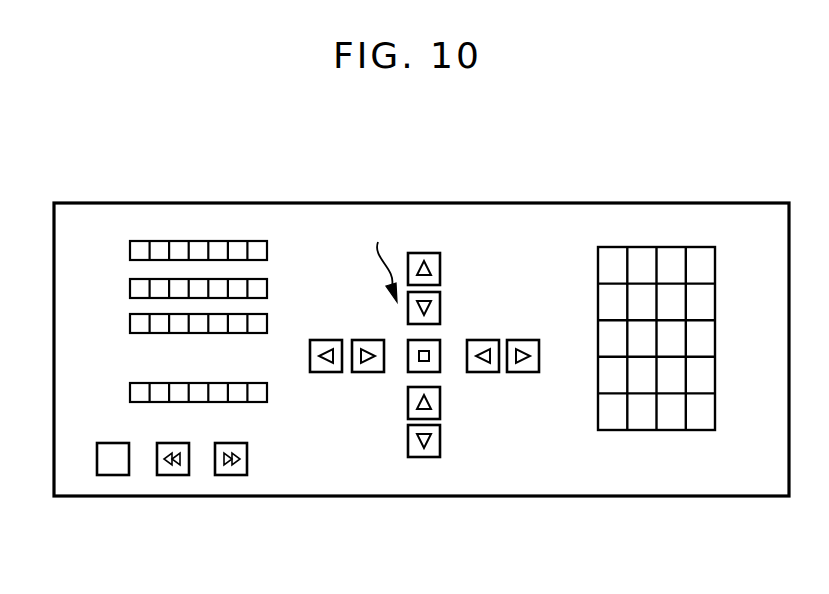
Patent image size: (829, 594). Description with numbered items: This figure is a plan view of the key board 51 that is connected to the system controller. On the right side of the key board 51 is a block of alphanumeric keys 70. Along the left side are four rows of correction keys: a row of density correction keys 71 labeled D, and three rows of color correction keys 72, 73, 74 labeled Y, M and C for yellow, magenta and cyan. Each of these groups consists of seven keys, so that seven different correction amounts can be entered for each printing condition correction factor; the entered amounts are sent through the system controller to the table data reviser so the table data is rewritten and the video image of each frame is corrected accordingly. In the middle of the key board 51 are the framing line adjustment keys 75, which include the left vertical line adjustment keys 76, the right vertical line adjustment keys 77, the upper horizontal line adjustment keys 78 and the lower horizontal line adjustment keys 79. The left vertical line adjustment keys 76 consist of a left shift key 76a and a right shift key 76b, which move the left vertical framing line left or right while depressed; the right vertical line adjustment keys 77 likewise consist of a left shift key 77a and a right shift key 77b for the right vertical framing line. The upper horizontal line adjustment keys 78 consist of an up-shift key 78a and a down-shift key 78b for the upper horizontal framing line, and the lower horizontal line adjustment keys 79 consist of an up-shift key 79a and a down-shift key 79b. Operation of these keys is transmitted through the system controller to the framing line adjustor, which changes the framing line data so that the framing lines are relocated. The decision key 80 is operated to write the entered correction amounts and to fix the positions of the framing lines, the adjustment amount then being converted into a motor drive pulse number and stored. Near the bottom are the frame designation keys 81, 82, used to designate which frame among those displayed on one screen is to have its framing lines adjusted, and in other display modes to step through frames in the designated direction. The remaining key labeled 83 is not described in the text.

The key board 51 is at (428, 203).
The alphanumeric keys 70 is at (716, 262).
The density correction keys 71 is at (137, 383).
The color correction keys 72 is at (267, 250).
The color correction keys 73 is at (261, 289).
The color correction keys 74 is at (262, 326).
The framing line adjustment keys 75 is at (377, 256).
The left vertical line adjustment keys 76 is at (327, 415).
The left shift key 76a is at (316, 372).
The right shift key 76b is at (356, 372).
The right vertical line adjustment keys 77 is at (524, 415).
The left shift key 77a is at (480, 372).
The right shift key 77b is at (542, 387).
The upper horizontal line adjustment keys 78 is at (501, 291).
The up-shift key 78a is at (442, 268).
The down-shift key 78b is at (442, 312).
The lower horizontal line adjustment keys 79 is at (443, 490).
The up-shift key 79a is at (404, 417).
The down-shift key 79b is at (441, 450).
The decision key 80 is at (374, 316).
The frame designation key 81 is at (172, 476).
The frame designation key 82 is at (230, 476).
The function key 83 is at (113, 476).